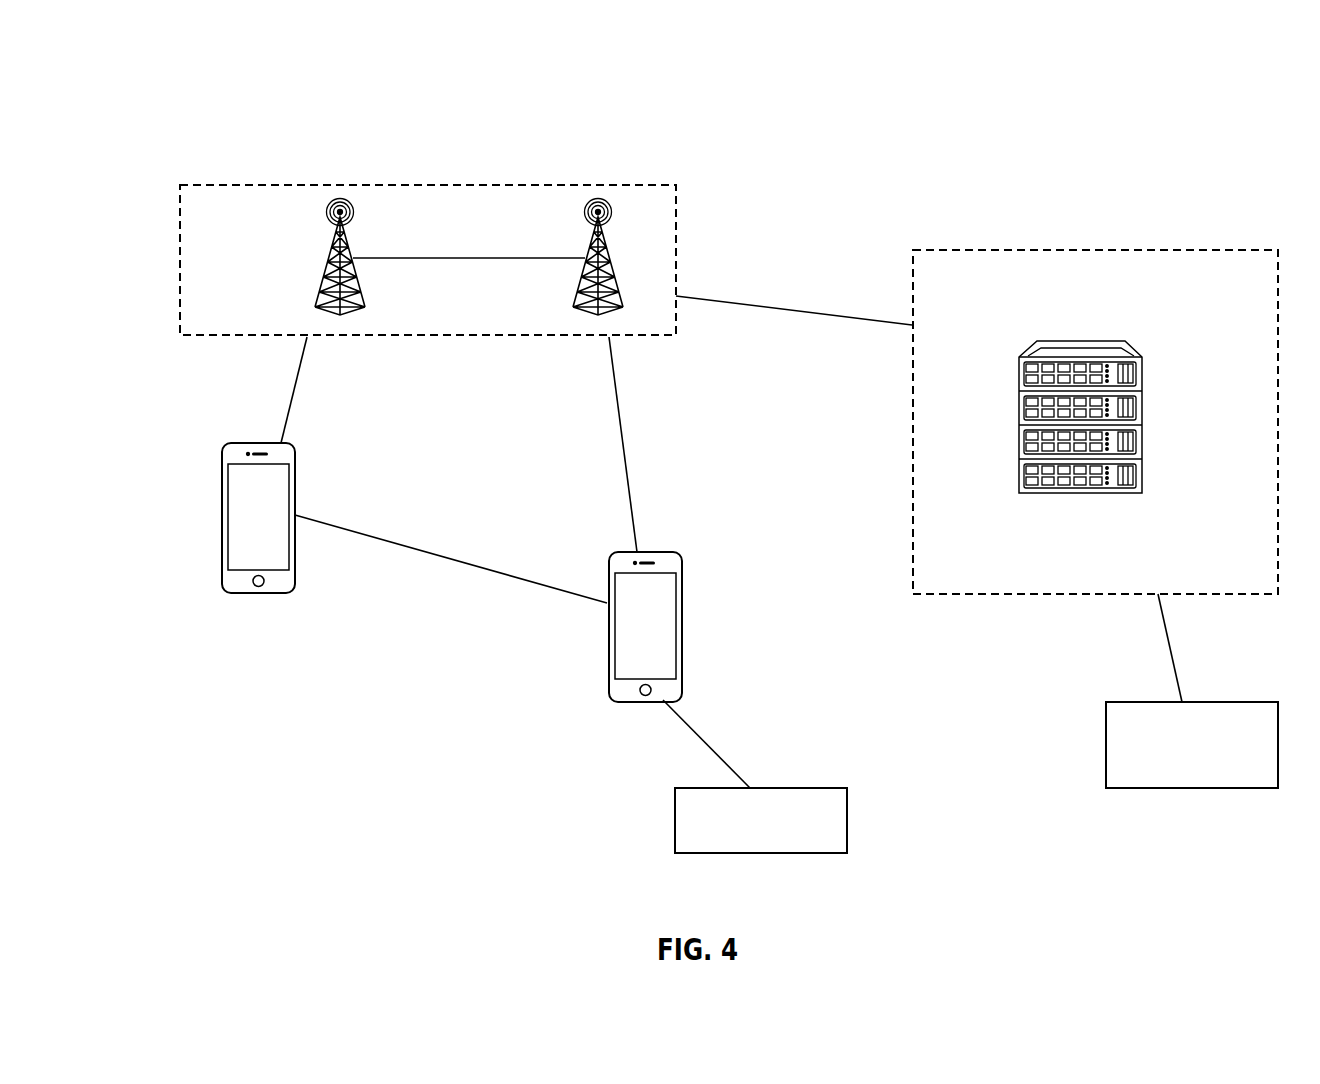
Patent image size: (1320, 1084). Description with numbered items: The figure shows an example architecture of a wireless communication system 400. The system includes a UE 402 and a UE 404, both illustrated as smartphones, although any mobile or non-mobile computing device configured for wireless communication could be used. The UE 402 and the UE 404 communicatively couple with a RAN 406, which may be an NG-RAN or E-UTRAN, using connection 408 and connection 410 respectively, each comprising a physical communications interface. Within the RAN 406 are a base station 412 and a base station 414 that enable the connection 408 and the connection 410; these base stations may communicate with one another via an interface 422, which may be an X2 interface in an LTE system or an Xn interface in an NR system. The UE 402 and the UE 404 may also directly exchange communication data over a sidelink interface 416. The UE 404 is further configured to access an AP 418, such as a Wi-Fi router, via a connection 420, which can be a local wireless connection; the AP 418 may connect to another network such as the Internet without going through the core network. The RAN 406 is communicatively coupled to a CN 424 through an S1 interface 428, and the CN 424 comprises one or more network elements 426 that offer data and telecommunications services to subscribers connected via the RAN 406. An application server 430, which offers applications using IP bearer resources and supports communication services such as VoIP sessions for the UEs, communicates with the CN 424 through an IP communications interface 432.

The wireless communication system 400 is at (1198, 101).
The UE 402 is at (222, 477).
The UE 404 is at (682, 587).
The RAN 406 is at (430, 185).
The connection 408 is at (296, 380).
The connection 410 is at (620, 420).
The base station 412 is at (335, 228).
The base station 414 is at (593, 228).
The sidelink interface 416 is at (445, 557).
The AP 418 is at (675, 835).
The connection 420 is at (697, 733).
The interface 422 is at (418, 258).
The CN 424 is at (1097, 249).
The network elements 426 is at (1143, 377).
The S1 interface 428 is at (760, 305).
The application server 430 is at (1106, 720).
The IP communications interface 432 is at (1173, 662).